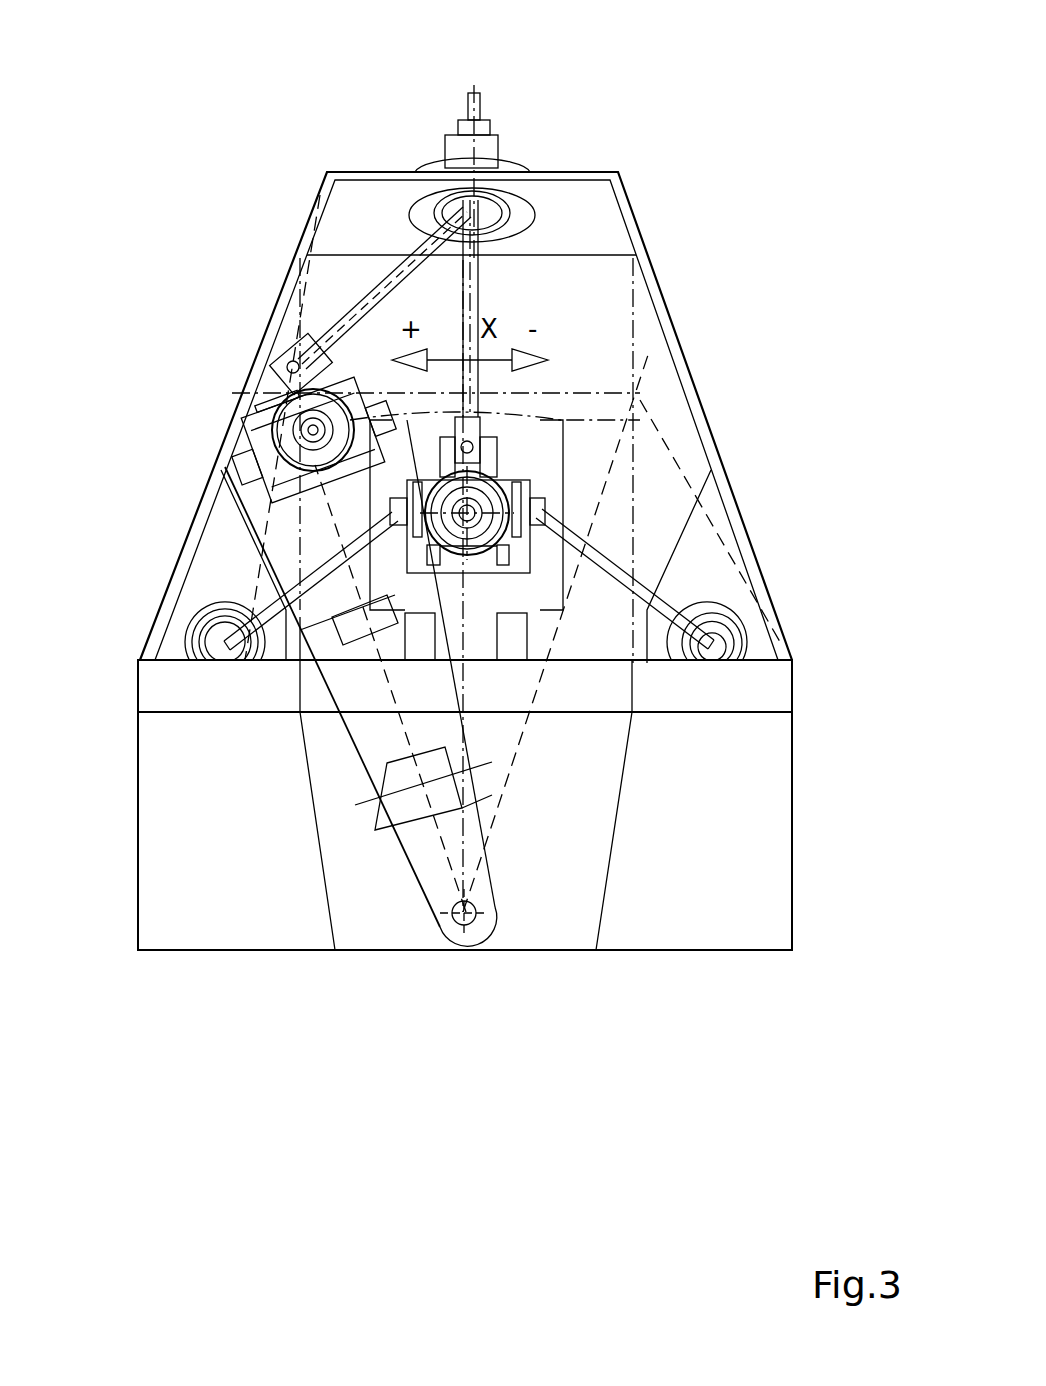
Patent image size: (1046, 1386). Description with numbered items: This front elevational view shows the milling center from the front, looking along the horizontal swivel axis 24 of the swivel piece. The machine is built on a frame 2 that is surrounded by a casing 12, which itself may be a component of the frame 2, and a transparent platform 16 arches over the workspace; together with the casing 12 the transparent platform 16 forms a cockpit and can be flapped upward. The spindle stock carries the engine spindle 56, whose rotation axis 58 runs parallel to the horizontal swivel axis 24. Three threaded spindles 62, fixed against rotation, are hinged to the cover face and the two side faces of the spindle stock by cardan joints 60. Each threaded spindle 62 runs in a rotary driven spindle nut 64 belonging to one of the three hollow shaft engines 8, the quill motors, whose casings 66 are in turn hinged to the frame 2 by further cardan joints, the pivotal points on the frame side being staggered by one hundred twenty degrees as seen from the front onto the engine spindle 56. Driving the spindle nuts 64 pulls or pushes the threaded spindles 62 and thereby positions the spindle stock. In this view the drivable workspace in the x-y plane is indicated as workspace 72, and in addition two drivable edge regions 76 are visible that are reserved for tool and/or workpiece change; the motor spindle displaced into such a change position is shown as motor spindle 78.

The frame 2 is at (371, 912).
The hollow shaft engines 8 is at (536, 122).
The casing 12 is at (272, 330).
The transparent platform 16 is at (305, 302).
The horizontal swivel axis 24 is at (462, 922).
The engine spindle 56 is at (407, 420).
The rotation axis of the engine spindle 58 is at (522, 480).
The cardan joints 60 is at (472, 437).
The threaded spindles 62 is at (478, 310).
The spindle nuts 64 is at (466, 118).
The casings of the quill motors 66 is at (455, 140).
The workspace in the x-y plane 72 is at (572, 487).
The drivable edge regions 76 is at (357, 507).
The motor spindle in change position 78 is at (276, 410).